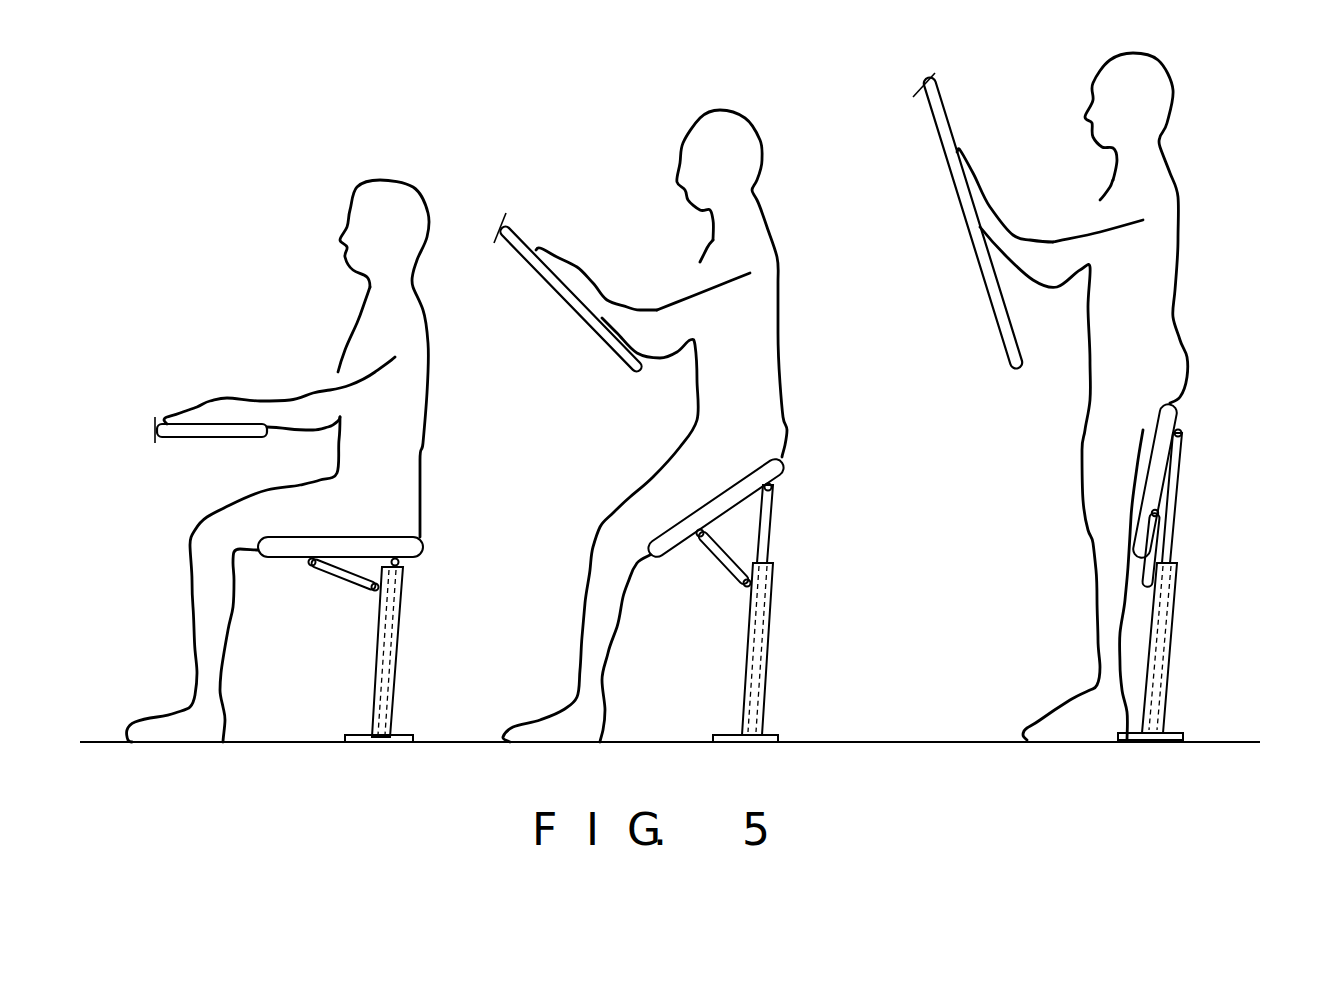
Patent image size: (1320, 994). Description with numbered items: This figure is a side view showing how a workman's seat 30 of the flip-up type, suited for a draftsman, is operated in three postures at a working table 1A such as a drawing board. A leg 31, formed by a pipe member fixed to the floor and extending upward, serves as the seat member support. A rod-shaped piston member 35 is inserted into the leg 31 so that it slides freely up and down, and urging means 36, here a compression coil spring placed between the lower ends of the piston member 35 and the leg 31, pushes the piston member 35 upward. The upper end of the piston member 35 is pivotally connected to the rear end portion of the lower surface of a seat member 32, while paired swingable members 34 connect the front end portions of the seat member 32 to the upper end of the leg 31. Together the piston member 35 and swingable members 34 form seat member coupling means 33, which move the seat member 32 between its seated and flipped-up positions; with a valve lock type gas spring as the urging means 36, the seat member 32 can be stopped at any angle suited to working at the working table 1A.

The working table 1A is at (193, 413).
The workman's seat 30 is at (769, 572).
The leg 31 is at (398, 653).
The seat member 32 is at (373, 543).
The seat member coupling means 33 is at (762, 540).
The swingable members 34 is at (357, 580).
The piston member 35 is at (395, 597).
The urging means 36 is at (387, 717).